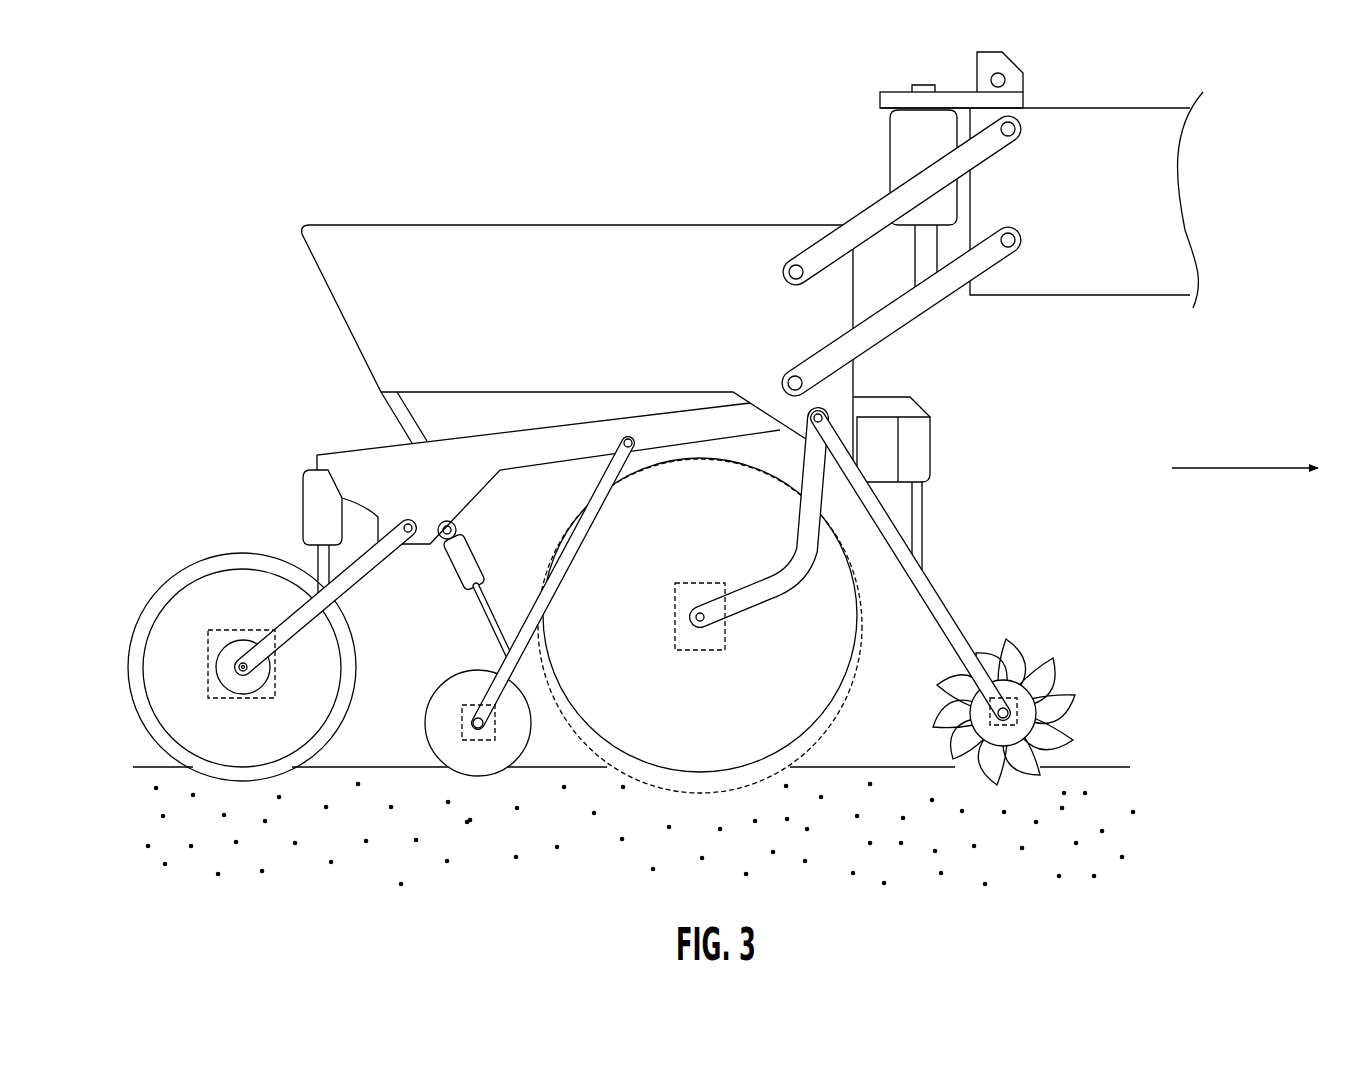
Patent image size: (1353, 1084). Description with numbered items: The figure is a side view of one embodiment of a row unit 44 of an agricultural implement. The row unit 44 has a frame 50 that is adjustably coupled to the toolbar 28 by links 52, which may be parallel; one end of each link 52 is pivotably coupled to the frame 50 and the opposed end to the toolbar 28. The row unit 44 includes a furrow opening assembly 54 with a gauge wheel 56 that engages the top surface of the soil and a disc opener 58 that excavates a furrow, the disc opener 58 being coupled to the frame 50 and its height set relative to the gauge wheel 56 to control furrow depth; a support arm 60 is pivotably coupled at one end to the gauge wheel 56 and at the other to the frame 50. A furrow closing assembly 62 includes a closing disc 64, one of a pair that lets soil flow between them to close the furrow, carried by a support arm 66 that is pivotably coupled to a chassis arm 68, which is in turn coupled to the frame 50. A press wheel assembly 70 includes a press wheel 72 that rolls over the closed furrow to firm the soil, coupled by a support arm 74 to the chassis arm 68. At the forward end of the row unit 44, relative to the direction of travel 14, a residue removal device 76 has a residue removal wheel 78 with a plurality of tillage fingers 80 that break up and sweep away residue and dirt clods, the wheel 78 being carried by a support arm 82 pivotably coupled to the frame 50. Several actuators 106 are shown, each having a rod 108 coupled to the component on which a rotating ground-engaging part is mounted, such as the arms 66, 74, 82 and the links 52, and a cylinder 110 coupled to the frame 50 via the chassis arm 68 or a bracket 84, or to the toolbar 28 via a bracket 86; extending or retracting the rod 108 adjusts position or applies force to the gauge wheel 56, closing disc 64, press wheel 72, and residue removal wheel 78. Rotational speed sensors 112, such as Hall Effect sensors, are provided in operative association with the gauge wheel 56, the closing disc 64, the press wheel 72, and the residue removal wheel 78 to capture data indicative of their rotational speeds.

The direction of travel 14 is at (1248, 468).
The toolbar 28 is at (1125, 105).
The row unit 44 is at (330, 125).
The frame 50 is at (585, 224).
The links 52 is at (995, 225).
The furrow opening assembly 54 is at (870, 683).
The gauge wheel 56 is at (857, 583).
The disc opener 58 is at (634, 780).
The support arm 60 is at (743, 613).
The furrow closing assembly 62 is at (447, 648).
The closing disc 64 is at (425, 750).
The support arm 66 is at (600, 478).
The chassis arm 68 is at (352, 448).
The press wheel assembly 70 is at (243, 630).
The press wheel 72 is at (132, 660).
The support arm 74 is at (362, 585).
The residue removal device 76 is at (964, 599).
The residue removal wheel 78 is at (1030, 716).
The tillage fingers 80 is at (1055, 670).
The support arm 82 is at (948, 612).
The bracket 84 is at (900, 397).
The bracket 86 is at (882, 92).
The actuator 106 is at (623, 353).
The rod 108 is at (918, 268).
The cylinder 110 is at (890, 162).
The rotational speed sensor 112 is at (670, 633).